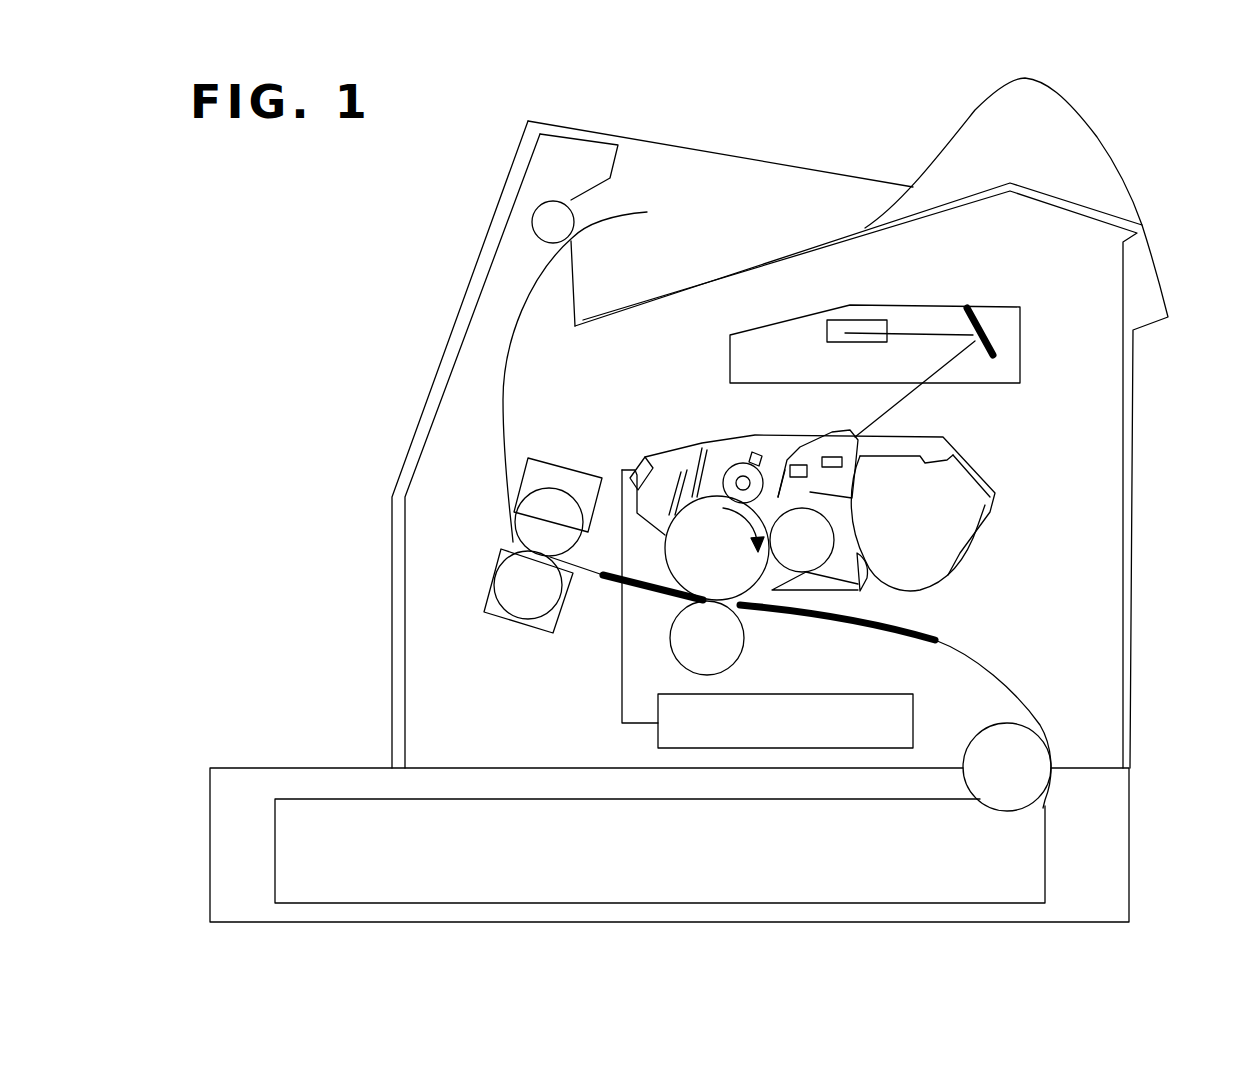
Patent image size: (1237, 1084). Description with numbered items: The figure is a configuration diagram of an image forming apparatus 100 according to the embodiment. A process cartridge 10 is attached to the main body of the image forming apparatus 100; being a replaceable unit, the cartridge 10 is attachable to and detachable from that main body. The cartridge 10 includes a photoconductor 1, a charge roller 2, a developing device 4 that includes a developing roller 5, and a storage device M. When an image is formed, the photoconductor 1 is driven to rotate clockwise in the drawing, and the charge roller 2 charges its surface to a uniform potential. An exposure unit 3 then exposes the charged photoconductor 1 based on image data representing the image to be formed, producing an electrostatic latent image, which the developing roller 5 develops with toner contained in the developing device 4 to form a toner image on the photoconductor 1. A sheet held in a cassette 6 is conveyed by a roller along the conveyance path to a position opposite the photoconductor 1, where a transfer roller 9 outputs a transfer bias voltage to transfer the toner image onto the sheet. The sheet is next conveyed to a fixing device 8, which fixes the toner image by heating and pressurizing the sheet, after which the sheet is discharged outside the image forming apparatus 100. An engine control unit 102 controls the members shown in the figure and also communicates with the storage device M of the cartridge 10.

The image forming apparatus 100 is at (600, 131).
The photoconductor 1 is at (700, 578).
The charge roller 2 is at (733, 465).
The exposure unit 3 is at (947, 305).
The developing device 4 is at (928, 562).
The developing roller 5 is at (852, 588).
The cassette 6 is at (452, 799).
The fixing device 8 is at (553, 458).
The transfer roller 9 is at (743, 645).
The process cartridge 10 is at (821, 523).
The engine control unit 102 is at (915, 718).
The storage device M is at (643, 457).